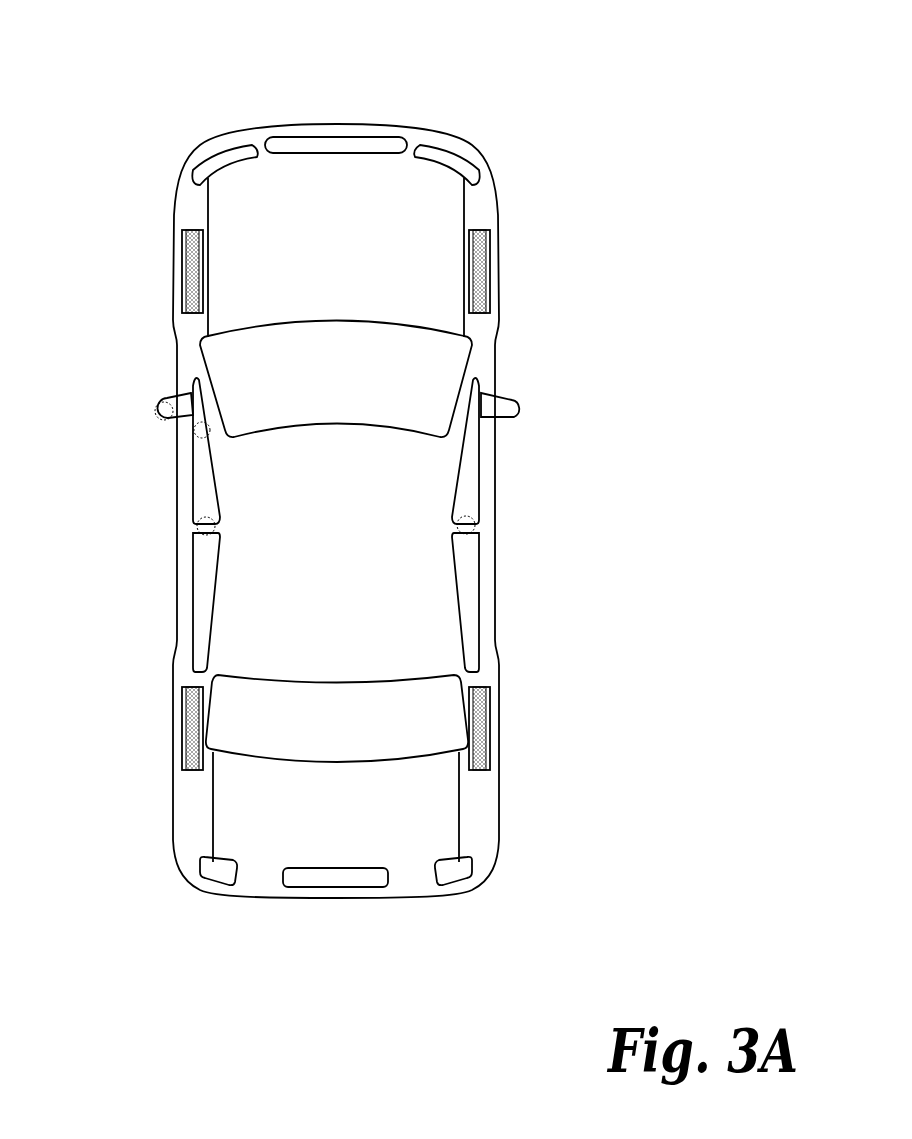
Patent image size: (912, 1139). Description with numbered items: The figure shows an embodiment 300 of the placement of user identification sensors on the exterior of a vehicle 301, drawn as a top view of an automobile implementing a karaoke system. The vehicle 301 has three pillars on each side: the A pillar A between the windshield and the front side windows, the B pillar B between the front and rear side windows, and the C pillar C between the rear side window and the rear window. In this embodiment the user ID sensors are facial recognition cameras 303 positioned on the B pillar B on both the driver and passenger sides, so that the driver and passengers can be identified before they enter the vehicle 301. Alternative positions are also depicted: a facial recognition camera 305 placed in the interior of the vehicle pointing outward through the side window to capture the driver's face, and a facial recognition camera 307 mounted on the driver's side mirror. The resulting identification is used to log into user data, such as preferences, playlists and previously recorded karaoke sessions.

The embodiment of user ID sensor placement 300 is at (143, 68).
The vehicle 301 is at (455, 128).
The user ID sensor 303 is at (200, 525).
The facial recognition camera 305 is at (200, 430).
The facial recognition camera 307 is at (153, 411).
The A pillar A is at (470, 378).
The B pillar B is at (473, 525).
The C pillar C is at (463, 678).